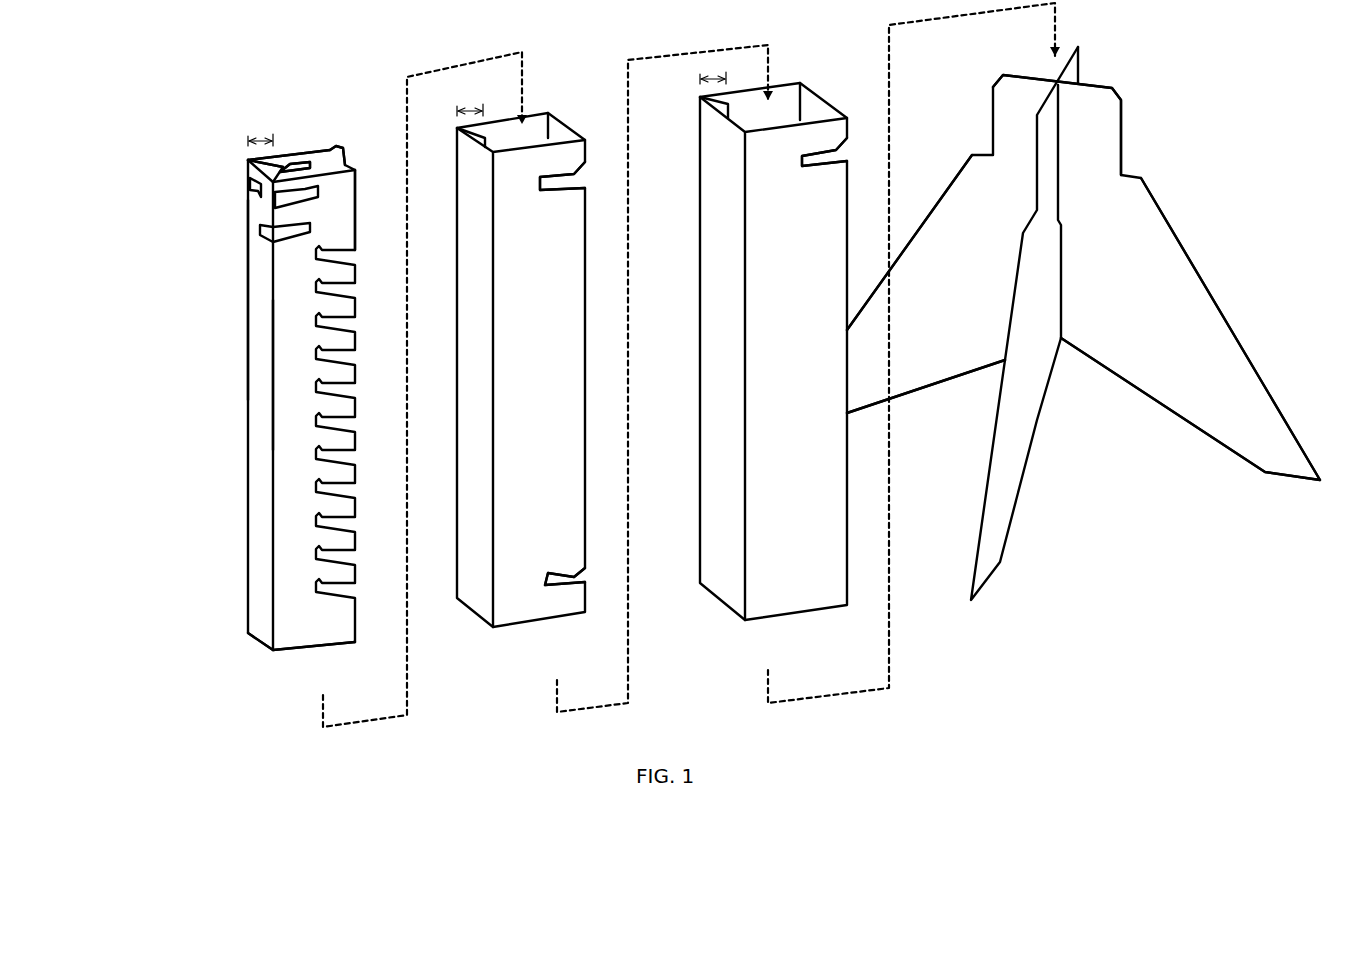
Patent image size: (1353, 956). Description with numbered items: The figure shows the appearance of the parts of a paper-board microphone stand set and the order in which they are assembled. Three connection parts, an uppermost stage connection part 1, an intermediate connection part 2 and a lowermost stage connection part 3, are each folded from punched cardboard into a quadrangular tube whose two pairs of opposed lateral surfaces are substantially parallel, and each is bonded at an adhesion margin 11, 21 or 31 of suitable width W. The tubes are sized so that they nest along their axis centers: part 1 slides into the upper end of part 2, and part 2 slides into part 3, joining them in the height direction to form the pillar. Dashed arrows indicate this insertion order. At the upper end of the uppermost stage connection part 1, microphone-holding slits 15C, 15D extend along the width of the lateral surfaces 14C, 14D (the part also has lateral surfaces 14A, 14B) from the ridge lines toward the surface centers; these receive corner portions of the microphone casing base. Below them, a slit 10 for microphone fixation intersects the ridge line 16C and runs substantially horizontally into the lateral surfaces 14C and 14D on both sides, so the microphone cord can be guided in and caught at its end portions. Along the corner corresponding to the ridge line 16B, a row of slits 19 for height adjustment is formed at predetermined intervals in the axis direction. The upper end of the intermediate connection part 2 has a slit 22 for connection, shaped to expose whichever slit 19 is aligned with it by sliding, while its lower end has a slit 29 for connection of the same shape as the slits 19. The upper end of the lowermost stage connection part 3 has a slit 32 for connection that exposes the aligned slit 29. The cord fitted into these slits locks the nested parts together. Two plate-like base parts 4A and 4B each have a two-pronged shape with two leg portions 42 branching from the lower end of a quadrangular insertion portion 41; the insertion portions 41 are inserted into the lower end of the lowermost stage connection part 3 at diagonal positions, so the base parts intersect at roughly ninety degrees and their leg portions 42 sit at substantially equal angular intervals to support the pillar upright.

The uppermost stage connection part 1 is at (338, 87).
The intermediate connection part 2 is at (557, 85).
The lowermost stage connection part 3 is at (815, 58).
The base part 4A is at (978, 415).
The base part 4B is at (1167, 167).
The slit for microphone fixation 10 is at (273, 233).
The adhesion margin 11 is at (279, 168).
The lateral surface 14A is at (320, 148).
The lateral surface 14B is at (344, 157).
The lateral surface 14C is at (344, 192).
The lateral surface 14D is at (262, 318).
The microphone-holding slit 15C is at (292, 168).
The microphone-holding slit 15D is at (256, 185).
The ridge line 16B is at (377, 612).
The ridge line 16C is at (273, 366).
The slits for height adjustment 19 is at (357, 248).
The adhesion margin 21 is at (483, 133).
The slit for connection 22 is at (582, 177).
The slit for connection 29 is at (580, 572).
The adhesion margin 31 is at (728, 100).
The slit for connection 32 is at (845, 148).
The insertion portion 41 is at (1079, 80).
The leg portions 42 is at (950, 184).